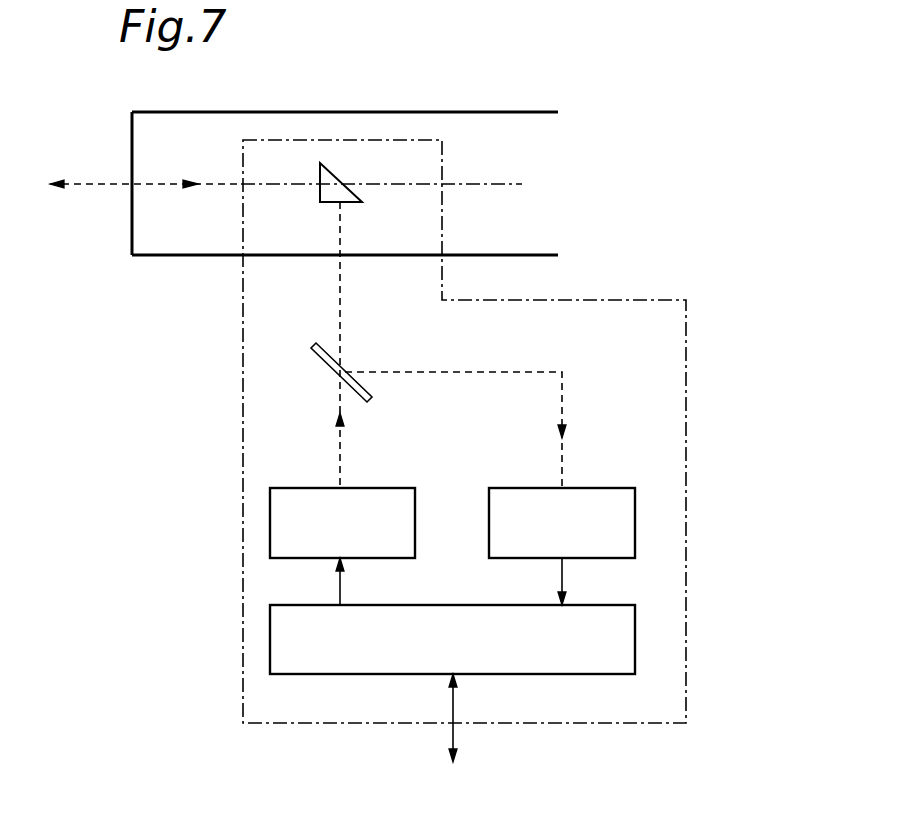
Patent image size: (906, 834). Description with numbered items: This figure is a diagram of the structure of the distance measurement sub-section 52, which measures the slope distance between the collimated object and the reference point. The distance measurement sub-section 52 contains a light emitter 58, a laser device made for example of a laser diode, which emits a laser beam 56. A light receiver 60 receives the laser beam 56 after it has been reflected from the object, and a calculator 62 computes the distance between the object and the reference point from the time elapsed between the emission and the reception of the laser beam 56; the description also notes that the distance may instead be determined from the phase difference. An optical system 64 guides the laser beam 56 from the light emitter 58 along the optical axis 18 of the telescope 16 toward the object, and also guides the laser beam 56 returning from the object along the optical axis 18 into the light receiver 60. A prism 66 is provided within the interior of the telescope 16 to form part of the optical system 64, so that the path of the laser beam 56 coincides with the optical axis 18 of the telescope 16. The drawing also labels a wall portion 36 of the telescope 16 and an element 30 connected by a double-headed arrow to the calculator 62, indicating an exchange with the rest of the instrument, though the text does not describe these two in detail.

The telescope 16 is at (345, 137).
The tube wall 36 is at (410, 112).
The optical axis 18 is at (522, 184).
The laser beam 56 is at (103, 184).
The distance measurement sub-section 52 is at (698, 320).
The prism 66 is at (343, 182).
The optical system 64 is at (326, 362).
The light emitter 58 is at (270, 520).
The light receiver 60 is at (637, 513).
The calculator 62 is at (637, 632).
The control unit 30 is at (469, 797).